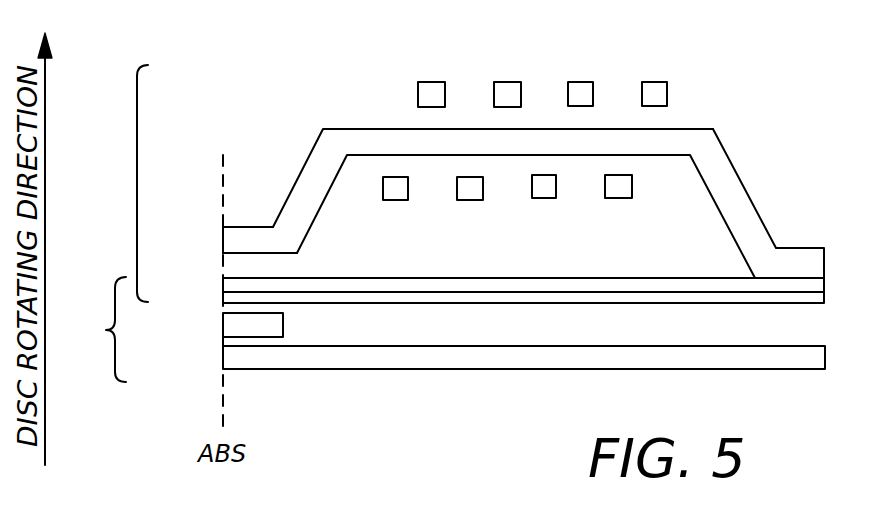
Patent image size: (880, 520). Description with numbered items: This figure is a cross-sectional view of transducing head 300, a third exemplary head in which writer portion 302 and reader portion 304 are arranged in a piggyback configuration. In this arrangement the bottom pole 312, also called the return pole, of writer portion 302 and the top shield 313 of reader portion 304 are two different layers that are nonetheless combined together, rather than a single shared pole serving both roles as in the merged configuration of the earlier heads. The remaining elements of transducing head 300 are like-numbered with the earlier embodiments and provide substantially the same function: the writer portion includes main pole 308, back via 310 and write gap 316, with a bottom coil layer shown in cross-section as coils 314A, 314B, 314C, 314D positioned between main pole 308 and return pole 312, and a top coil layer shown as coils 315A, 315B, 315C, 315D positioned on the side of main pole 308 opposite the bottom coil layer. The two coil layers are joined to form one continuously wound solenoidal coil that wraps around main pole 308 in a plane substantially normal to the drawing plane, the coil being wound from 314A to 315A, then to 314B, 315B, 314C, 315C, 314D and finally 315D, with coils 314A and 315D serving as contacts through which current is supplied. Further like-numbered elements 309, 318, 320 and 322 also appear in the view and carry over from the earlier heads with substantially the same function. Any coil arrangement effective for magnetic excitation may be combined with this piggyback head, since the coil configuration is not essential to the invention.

The transducing head 300 is at (296, 76).
The writer portion 302 is at (118, 183).
The reader portion 304 is at (91, 329).
The main pole 308 is at (313, 177).
The air bearing surface edge of shield 309 is at (226, 226).
The back via 310 is at (745, 200).
The bottom pole 312 is at (223, 287).
The top shield 313 is at (232, 297).
The bottom coil layer coil 314A is at (394, 189).
The bottom coil layer coil 314B is at (470, 188).
The bottom coil layer coil 314C is at (542, 188).
The bottom coil layer coil 314D is at (622, 188).
The top coil layer coil 315A is at (432, 90).
The top coil layer coil 315B is at (508, 90).
The top coil layer coil 315C is at (583, 88).
The top coil layer coil 315D is at (655, 88).
The write gap 316 is at (237, 266).
The read element 318 is at (235, 325).
The slider body 320 is at (477, 358).
The insulating layer 322 is at (357, 325).